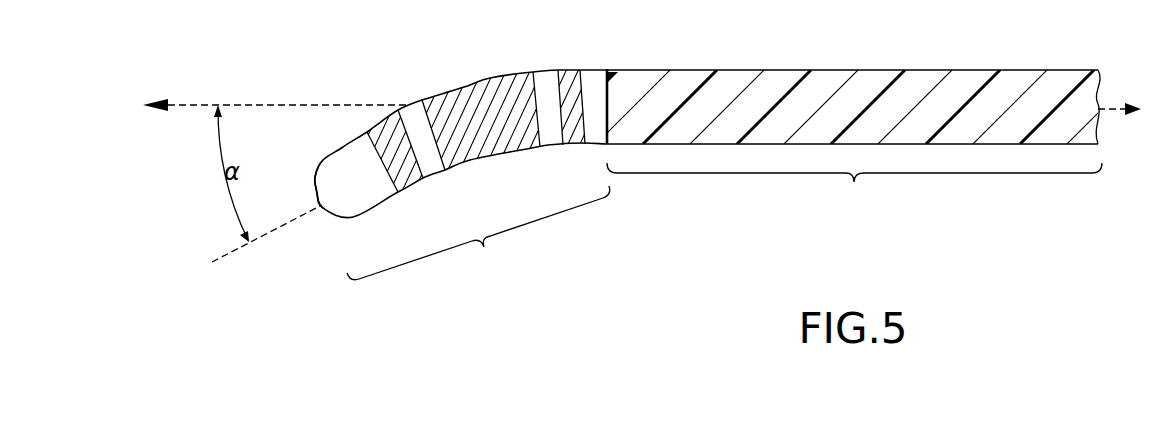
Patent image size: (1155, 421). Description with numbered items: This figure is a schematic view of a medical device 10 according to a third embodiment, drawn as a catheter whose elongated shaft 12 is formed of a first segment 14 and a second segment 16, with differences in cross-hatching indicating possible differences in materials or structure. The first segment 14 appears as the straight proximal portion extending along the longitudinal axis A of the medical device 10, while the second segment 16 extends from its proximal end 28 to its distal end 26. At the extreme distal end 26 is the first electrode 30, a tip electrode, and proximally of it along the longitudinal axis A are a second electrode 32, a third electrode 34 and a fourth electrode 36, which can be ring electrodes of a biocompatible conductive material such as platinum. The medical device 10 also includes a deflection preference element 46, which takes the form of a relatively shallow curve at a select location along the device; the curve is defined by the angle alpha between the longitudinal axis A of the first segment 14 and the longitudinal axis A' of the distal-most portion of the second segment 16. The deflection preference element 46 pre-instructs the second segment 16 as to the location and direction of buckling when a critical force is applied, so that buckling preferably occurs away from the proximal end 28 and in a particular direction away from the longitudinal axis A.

The medical device 10 is at (698, 232).
The elongated shaft 12 is at (836, 70).
The first segment 14 is at (854, 189).
The second segment 16 is at (478, 233).
The distal end 26 is at (322, 208).
The proximal end 28 is at (607, 69).
The first electrode 30 is at (352, 214).
The second electrode 32 is at (436, 172).
The third electrode 34 is at (548, 147).
The fourth electrode 36 is at (589, 145).
The deflection preference element 46 is at (487, 70).
The longitudinal axis A is at (642, 88).
The longitudinal axis of the distal-most portion of the second segment A' is at (241, 237).